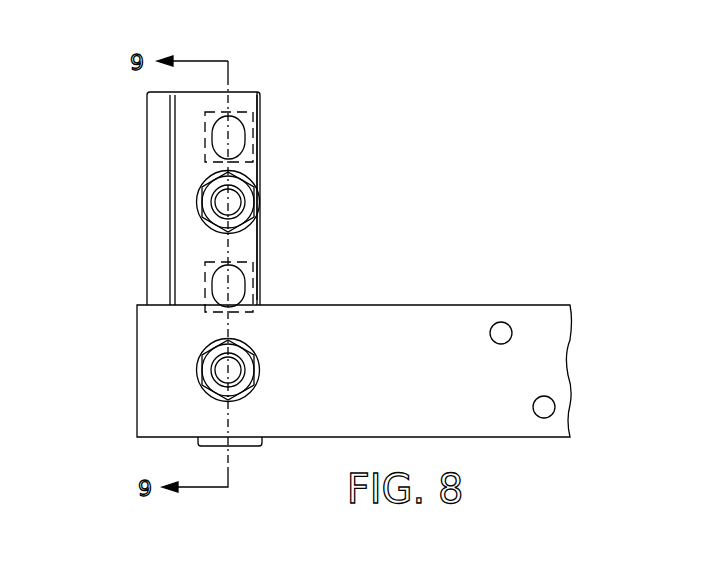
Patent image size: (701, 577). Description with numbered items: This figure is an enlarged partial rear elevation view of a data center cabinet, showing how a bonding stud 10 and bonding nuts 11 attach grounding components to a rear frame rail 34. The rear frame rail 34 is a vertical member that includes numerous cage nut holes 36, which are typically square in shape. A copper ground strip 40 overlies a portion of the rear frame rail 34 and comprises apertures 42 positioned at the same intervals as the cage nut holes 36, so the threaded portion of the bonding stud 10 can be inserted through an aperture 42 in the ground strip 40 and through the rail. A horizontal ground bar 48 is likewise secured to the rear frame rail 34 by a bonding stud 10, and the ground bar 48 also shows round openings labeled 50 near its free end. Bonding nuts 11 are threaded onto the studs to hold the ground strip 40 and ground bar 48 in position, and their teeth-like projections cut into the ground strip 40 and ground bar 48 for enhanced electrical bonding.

The bonding stud 10 is at (245, 207).
The bonding nut 11 is at (257, 195).
The rear frame rail 34 is at (150, 113).
The cage nut hole 36 is at (205, 160).
The copper ground strip 40 is at (252, 103).
The aperture 42 is at (212, 138).
The ground bar 48 is at (362, 323).
The hole 50 is at (500, 324).